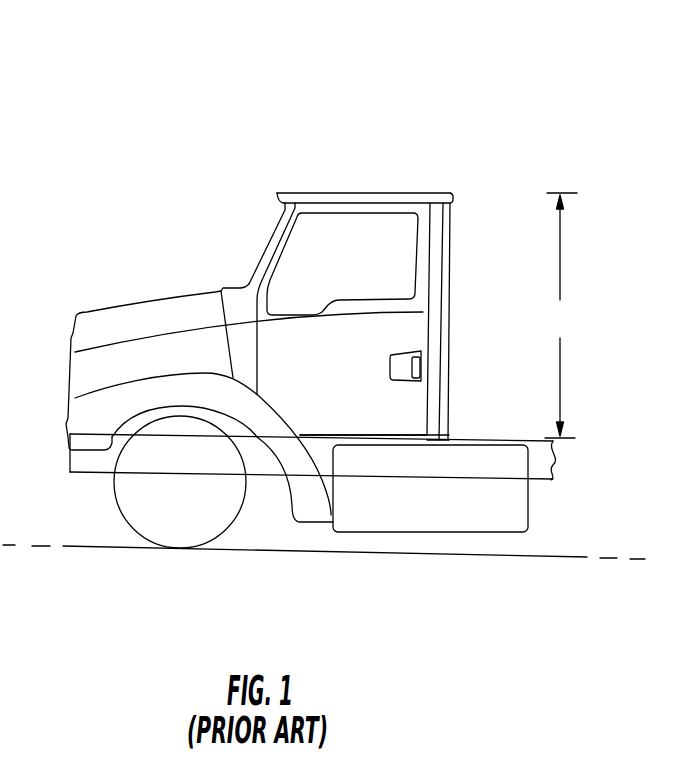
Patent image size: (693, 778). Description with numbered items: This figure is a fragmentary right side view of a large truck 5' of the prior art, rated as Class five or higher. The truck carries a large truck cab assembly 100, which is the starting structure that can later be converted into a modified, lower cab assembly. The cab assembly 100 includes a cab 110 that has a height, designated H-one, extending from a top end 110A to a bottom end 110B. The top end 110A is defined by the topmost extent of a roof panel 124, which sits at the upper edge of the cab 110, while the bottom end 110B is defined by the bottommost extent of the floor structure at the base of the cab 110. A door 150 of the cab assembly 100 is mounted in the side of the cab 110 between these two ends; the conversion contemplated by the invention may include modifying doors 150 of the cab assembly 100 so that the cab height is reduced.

The large truck 5' is at (324, 314).
The large truck cab assembly 100 is at (386, 56).
The cab 110 is at (432, 152).
The top end 110A is at (447, 193).
The bottom end 110B is at (430, 436).
The roof panel 124 is at (378, 193).
The door 150 is at (390, 337).